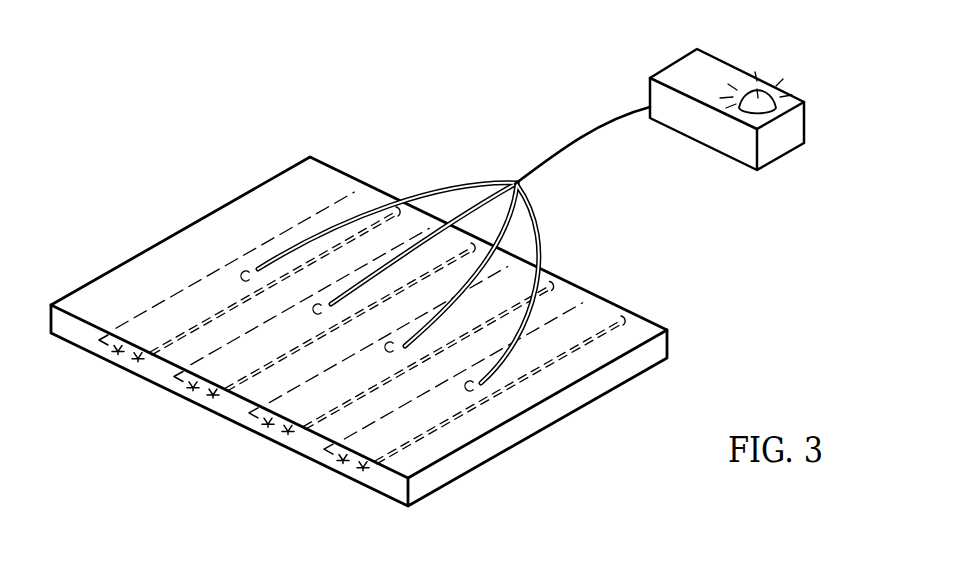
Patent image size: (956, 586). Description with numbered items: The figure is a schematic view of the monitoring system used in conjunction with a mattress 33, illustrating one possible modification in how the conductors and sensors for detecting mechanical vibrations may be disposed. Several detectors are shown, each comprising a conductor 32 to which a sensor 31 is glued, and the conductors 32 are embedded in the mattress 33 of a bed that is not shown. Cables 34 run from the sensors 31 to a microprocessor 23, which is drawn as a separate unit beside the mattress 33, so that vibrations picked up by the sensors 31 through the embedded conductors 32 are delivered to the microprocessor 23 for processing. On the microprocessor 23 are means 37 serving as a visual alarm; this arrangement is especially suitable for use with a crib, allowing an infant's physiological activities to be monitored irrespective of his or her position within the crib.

The microprocessor 23 is at (690, 78).
The sensors 31 is at (247, 278).
The conductors 32 is at (260, 440).
The mattress 33 is at (277, 195).
The cables 34 is at (557, 157).
The means serving as a visual alarm 37 is at (767, 80).